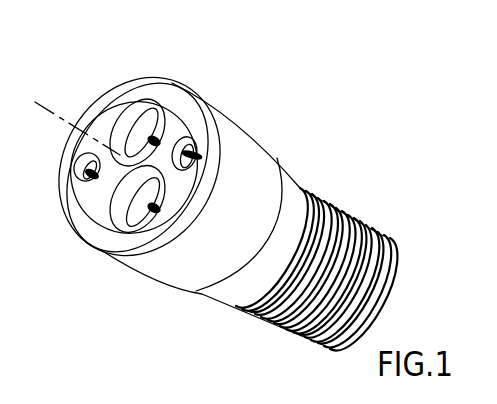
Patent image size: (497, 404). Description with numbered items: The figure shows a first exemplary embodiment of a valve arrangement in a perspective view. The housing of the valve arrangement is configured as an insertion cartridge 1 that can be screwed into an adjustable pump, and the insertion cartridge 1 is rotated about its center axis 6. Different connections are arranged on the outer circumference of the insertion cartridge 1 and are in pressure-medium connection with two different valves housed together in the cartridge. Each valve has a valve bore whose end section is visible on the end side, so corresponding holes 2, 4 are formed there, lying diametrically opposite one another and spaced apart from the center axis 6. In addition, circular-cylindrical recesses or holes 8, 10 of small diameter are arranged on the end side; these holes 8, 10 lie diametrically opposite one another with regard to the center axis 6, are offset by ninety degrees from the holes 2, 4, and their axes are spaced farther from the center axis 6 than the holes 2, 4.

The insertion cartridge 1 is at (316, 161).
The hole 2 is at (119, 108).
The hole 4 is at (122, 185).
The center axis 6 is at (48, 104).
The circular-cylindrical recess or hole 8 is at (88, 180).
The circular-cylindrical recess or hole 10 is at (181, 165).